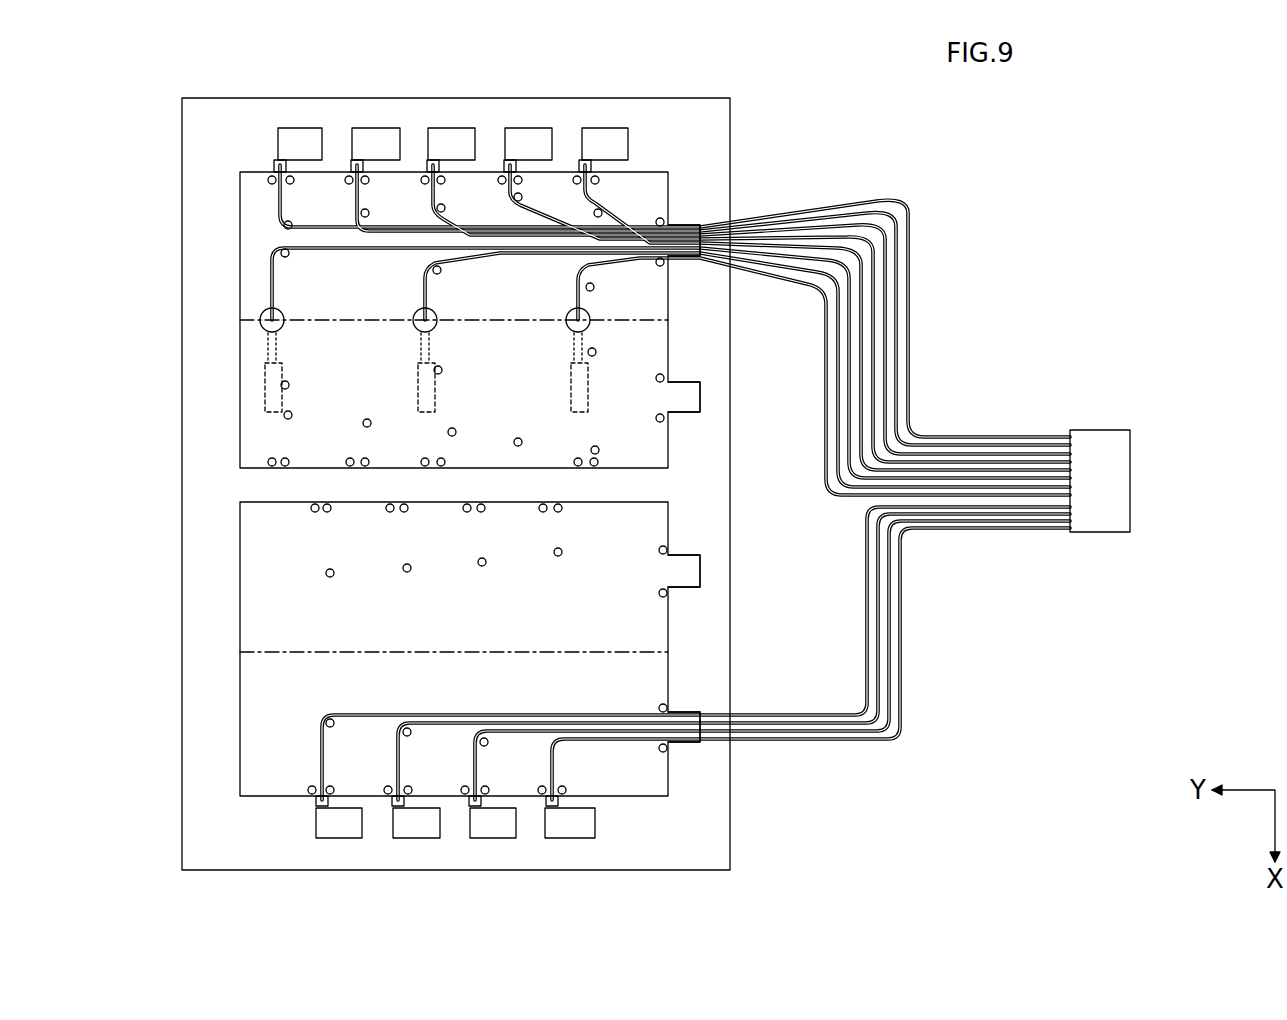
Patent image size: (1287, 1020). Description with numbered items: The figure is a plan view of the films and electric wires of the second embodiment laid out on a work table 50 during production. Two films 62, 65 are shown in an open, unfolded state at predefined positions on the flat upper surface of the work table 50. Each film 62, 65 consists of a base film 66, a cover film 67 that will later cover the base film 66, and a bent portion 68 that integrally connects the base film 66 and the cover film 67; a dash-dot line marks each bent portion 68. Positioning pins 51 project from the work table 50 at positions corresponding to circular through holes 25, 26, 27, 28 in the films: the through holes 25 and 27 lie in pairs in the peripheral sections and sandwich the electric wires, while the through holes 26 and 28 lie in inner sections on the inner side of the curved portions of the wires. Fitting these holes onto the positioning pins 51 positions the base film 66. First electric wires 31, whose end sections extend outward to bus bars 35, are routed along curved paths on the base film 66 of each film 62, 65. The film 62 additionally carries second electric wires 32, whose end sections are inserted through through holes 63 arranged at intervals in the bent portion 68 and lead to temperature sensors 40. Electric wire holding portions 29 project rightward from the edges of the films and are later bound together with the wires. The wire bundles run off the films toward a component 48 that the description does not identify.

The work table 50 is at (708, 98).
The film 62 is at (655, 172).
The film 65 is at (656, 500).
The base film 66 is at (250, 200).
The cover film 67 is at (250, 388).
The bent portion 68 is at (516, 322).
The bus bar 35 is at (300, 136).
The positioning pin 51 is at (285, 160).
The through hole 25 is at (284, 170).
The through hole 26 is at (286, 253).
The through hole 27 is at (272, 462).
The through hole 28 is at (369, 422).
The electric wire holding portion 29 is at (680, 260).
The first electric wire 31 is at (298, 208).
The second electric wire 32 is at (280, 302).
The through hole 63 is at (282, 318).
The temperature sensor 40 is at (283, 373).
The connector 48 is at (1098, 440).